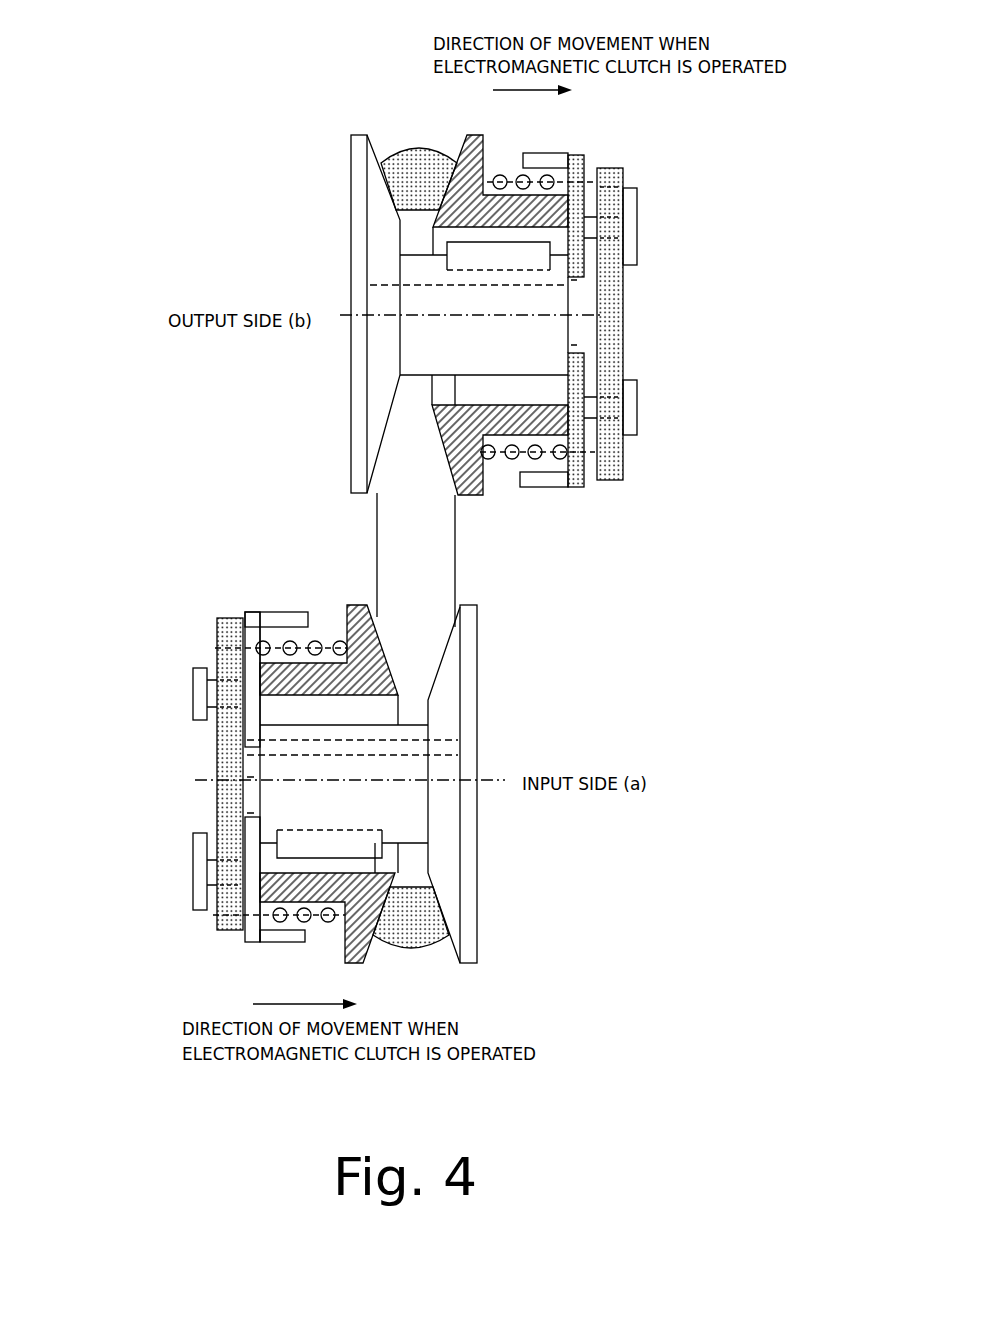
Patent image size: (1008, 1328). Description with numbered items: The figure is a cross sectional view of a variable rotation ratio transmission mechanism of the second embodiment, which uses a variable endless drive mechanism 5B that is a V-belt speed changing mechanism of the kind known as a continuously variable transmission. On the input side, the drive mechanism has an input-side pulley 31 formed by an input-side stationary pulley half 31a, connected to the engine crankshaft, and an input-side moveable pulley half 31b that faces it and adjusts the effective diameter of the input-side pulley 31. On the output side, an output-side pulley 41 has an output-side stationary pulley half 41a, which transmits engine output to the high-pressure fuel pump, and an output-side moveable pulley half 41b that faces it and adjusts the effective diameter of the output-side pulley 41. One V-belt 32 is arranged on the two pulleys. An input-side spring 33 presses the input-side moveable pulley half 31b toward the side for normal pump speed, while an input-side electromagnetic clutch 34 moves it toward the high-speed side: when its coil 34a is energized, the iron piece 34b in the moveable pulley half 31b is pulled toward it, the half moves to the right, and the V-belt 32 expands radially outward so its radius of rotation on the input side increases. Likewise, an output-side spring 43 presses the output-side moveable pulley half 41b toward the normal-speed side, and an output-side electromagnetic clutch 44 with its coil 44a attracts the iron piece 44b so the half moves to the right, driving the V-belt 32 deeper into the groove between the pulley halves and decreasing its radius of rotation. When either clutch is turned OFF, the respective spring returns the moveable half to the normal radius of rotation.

The variable endless drive mechanism 5B is at (582, 577).
The input-side pulley 31 is at (395, 771).
The input-side stationary pulley half 31a is at (477, 870).
The input-side moveable pulley half 31b is at (400, 647).
The V-belt 32 is at (416, 150).
The input-side spring 33 is at (327, 927).
The input-side electromagnetic clutch 34 is at (144, 803).
The coil 34a is at (223, 932).
The iron piece 34b is at (190, 890).
The output-side pulley 41 is at (441, 323).
The output-side stationary pulley half 41a is at (457, 433).
The output-side moveable pulley half 41b is at (385, 207).
The output-side spring 43 is at (503, 177).
The output-side electromagnetic clutch 44 is at (681, 291).
The coil 44a is at (627, 187).
The iron piece 44b is at (580, 155).